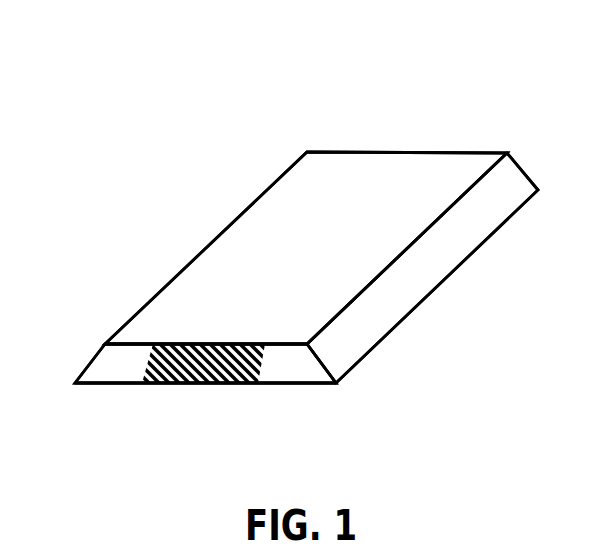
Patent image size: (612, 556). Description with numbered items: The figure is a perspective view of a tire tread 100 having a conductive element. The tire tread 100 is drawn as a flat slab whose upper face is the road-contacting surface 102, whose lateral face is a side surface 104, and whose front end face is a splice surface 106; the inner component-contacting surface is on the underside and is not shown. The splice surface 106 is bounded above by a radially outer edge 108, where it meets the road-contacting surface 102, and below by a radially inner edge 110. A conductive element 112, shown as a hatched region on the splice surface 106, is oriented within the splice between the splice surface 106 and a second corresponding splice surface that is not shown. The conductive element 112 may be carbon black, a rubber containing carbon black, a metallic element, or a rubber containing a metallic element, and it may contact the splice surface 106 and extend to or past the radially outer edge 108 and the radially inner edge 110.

The tire tread 100 is at (160, 134).
The road-contacting surface 102 is at (385, 172).
The side surface 104 is at (467, 227).
The splice surface 106 is at (301, 365).
The radially outer edge 108 is at (125, 342).
The radially inner edge 110 is at (92, 383).
The conductive element 112 is at (233, 368).